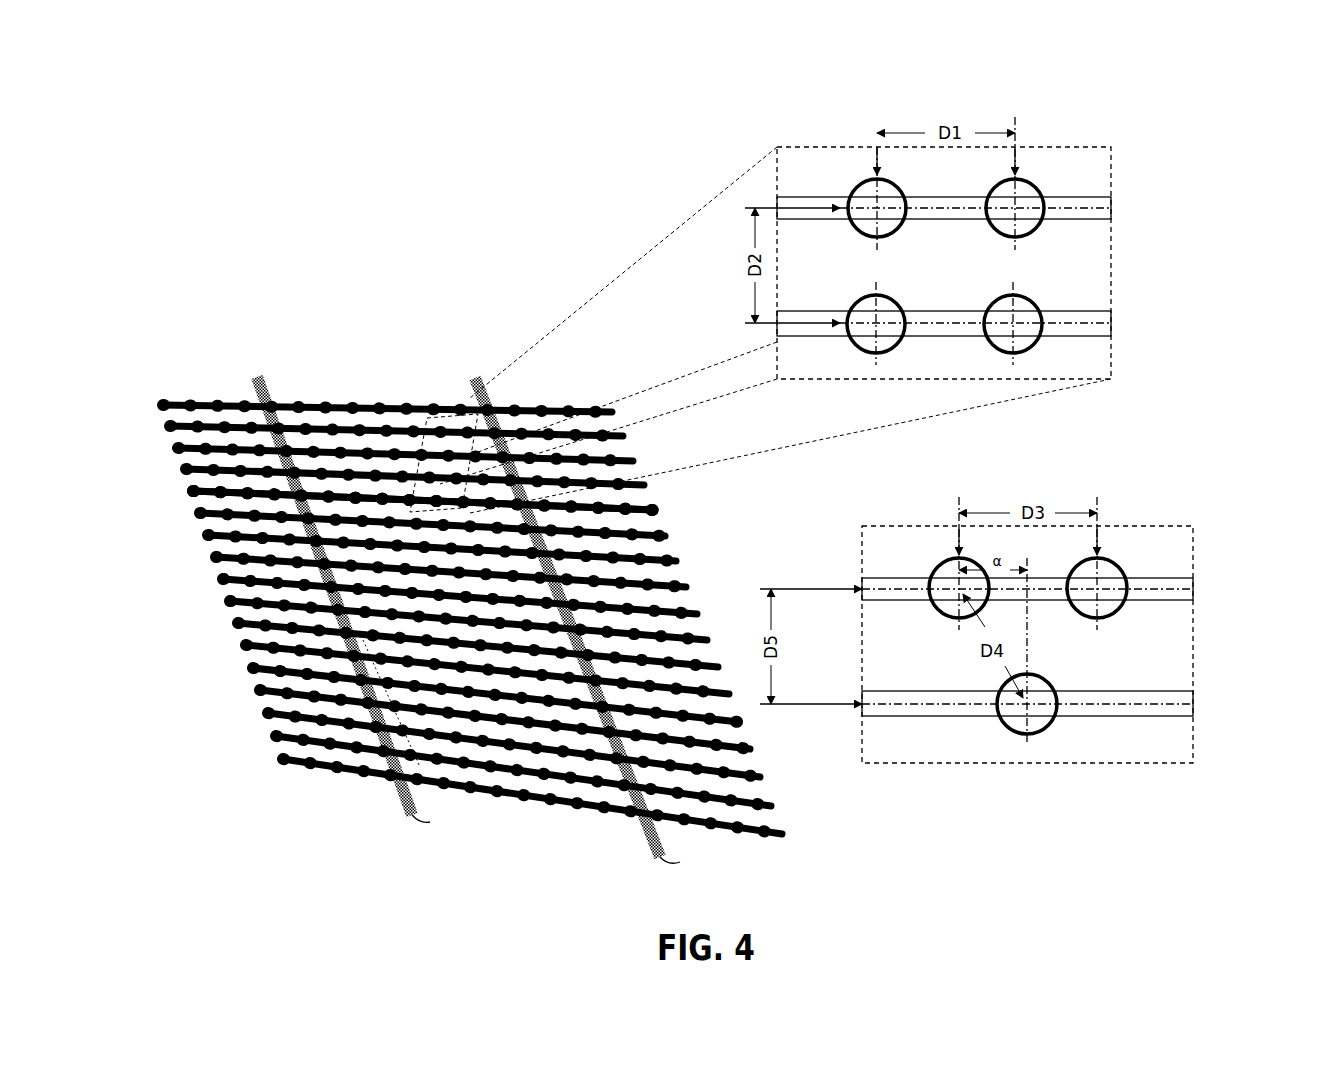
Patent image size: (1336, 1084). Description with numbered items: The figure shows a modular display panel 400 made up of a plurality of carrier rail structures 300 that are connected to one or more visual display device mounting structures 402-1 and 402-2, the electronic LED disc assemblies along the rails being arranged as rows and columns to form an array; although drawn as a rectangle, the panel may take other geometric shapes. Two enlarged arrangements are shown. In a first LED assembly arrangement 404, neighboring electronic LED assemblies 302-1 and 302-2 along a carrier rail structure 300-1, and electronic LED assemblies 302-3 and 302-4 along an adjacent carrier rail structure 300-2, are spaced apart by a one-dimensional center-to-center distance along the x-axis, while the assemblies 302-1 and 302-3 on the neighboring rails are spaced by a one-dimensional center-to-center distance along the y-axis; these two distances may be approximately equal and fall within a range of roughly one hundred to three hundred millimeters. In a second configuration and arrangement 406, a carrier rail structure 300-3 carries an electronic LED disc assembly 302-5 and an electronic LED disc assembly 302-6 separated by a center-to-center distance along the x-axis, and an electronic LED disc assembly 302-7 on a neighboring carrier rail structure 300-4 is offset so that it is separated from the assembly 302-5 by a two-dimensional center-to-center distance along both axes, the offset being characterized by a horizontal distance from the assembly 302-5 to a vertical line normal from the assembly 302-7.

The carrier rail structures 300 is at (167, 397).
The carrier rail structure 300-1 is at (198, 472).
The carrier rail structure 300-2 is at (208, 492).
The carrier rail structure 300-3 is at (1195, 589).
The carrier rail structure 300-4 is at (1195, 704).
The electronic LED assembly 302-1 is at (857, 185).
The electronic LED assembly 302-2 is at (1035, 187).
The electronic LED assembly 302-3 is at (856, 303).
The electronic LED assembly 302-4 is at (1033, 304).
The electronic LED disc assembly 302-5 is at (938, 567).
The electronic LED disc assembly 302-6 is at (1118, 567).
The electronic LED disc assembly 302-7 is at (1048, 725).
The modular display panel 400 is at (313, 213).
The visual display device mounting structure 402-1 is at (258, 375).
The visual display device mounting structure 402-2 is at (483, 378).
The first LED assembly arrangement 404 is at (764, 128).
The second configuration and arrangement 406 is at (818, 533).